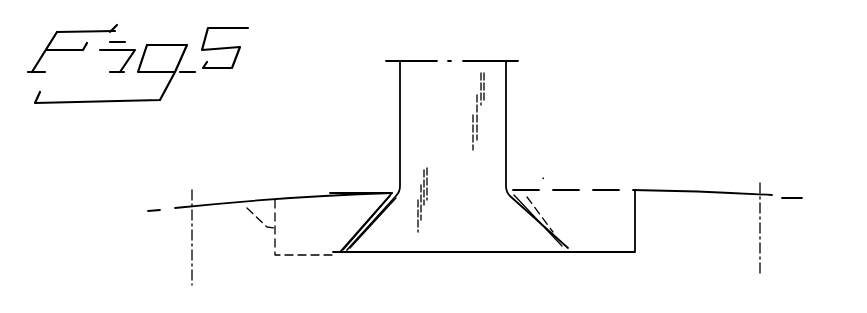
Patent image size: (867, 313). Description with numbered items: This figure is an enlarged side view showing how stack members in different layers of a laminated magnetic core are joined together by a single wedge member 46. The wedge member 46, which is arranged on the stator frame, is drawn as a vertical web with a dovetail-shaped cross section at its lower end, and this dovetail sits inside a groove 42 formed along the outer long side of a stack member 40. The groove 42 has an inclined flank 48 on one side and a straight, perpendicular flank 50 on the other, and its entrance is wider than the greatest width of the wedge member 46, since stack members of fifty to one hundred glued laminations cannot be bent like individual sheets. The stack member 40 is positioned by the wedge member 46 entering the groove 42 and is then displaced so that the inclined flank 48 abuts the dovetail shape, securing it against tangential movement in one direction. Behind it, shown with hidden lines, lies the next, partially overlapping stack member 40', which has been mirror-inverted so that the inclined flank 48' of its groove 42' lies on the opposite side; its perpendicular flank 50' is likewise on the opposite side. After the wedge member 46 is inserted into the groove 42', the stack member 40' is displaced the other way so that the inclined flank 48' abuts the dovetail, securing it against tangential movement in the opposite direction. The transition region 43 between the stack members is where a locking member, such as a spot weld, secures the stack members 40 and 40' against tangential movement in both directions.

The stack member 40 is at (740, 207).
The partially overlapping stack member 40' is at (786, 177).
The groove 42 is at (485, 248).
The groove of the mirror-inverted stack member 42' is at (292, 255).
The bend / junction of stem and flange 43 is at (386, 220).
The wedge member 46 is at (497, 88).
The inclined flank 48 is at (340, 200).
The inclined flank of the mirror-inverted groove 48' is at (561, 186).
The straight, perpendicular flank 50 is at (702, 178).
The straight, perpendicular flank of the mirror-inverted groove 50' is at (270, 219).